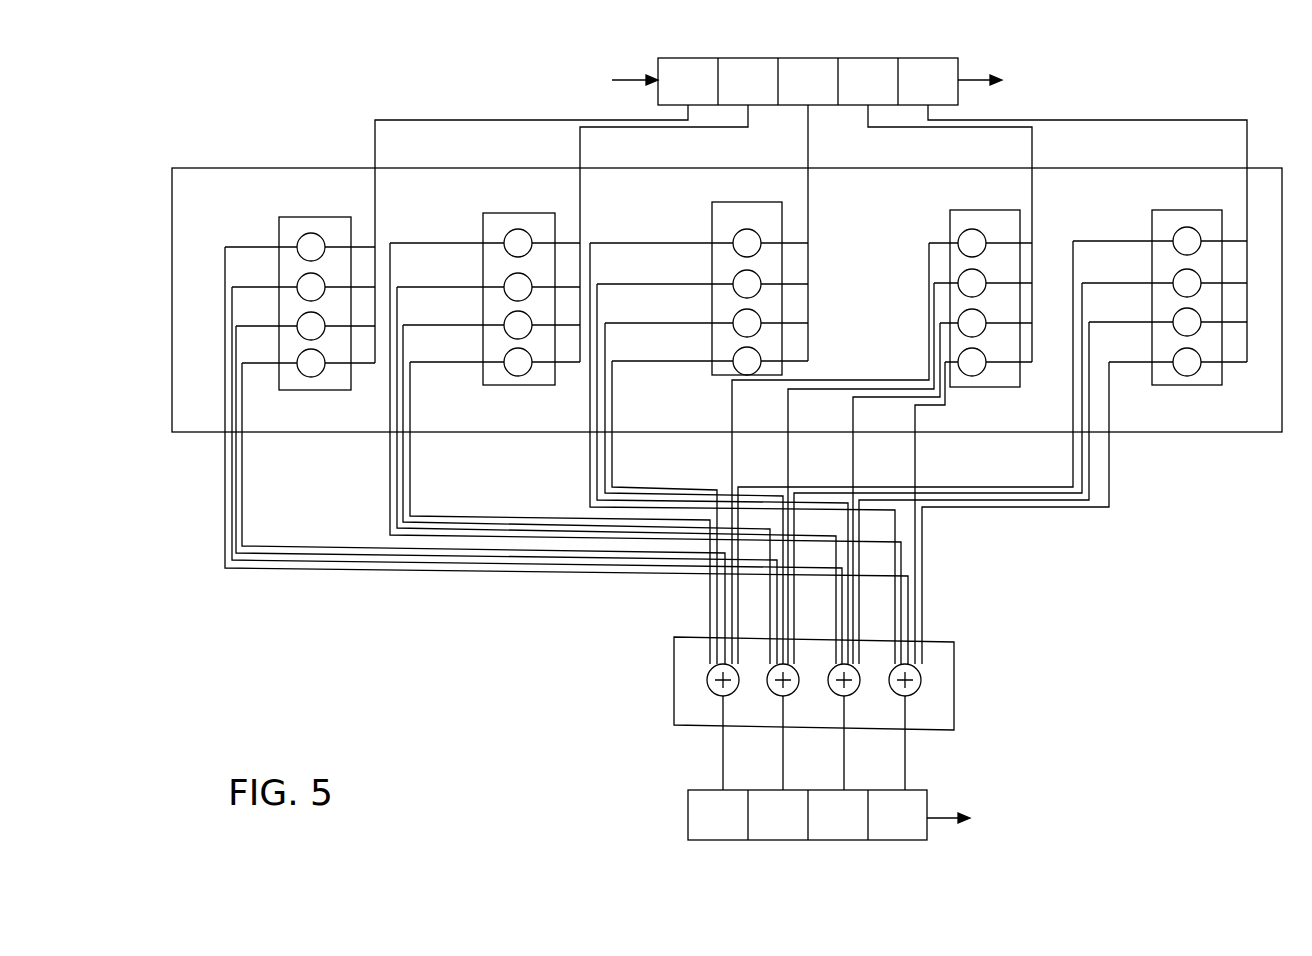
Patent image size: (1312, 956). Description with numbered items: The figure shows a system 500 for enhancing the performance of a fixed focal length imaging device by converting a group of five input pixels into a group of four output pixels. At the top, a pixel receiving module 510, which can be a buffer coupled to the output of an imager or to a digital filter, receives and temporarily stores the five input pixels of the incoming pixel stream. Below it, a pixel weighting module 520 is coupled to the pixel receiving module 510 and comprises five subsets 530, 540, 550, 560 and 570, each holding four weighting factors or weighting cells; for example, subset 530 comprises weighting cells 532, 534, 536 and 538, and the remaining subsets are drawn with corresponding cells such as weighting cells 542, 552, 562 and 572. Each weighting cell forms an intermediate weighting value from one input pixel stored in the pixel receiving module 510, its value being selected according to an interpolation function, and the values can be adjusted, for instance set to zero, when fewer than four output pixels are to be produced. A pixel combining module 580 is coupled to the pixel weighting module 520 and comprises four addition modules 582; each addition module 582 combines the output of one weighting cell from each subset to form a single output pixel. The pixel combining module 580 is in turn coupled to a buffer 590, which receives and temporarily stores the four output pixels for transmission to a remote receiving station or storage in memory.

The system 500 is at (236, 106).
The pixel receiving module 510 is at (945, 58).
The pixel weighting module 520 is at (1252, 433).
The subset of weighting cells 530 is at (1192, 303).
The weighting cell 532 is at (1200, 377).
The weighting cell 534 is at (1200, 332).
The weighting cell 536 is at (1200, 292).
The weighting cell 538 is at (1200, 250).
The subset of weighting cells 540 is at (968, 303).
The weight element W24 542 is at (983, 373).
The subset of weighting cells 550 is at (699, 298).
The weight element W34 552 is at (733, 372).
The subset of weighting cells 560 is at (489, 302).
The weight element W44 562 is at (527, 378).
The subset of weighting cells 570 is at (306, 302).
The weight element W54 572 is at (322, 377).
The pixel combining module 580 is at (821, 691).
The addition module 582 is at (707, 686).
The buffer 590 is at (833, 840).